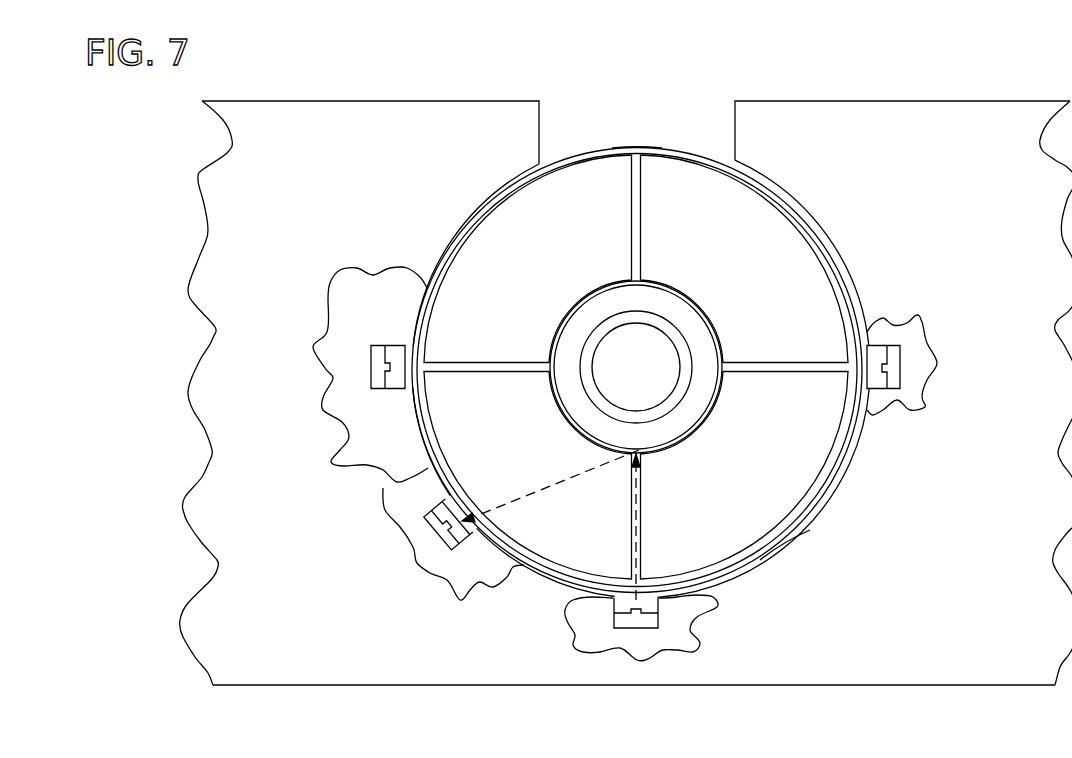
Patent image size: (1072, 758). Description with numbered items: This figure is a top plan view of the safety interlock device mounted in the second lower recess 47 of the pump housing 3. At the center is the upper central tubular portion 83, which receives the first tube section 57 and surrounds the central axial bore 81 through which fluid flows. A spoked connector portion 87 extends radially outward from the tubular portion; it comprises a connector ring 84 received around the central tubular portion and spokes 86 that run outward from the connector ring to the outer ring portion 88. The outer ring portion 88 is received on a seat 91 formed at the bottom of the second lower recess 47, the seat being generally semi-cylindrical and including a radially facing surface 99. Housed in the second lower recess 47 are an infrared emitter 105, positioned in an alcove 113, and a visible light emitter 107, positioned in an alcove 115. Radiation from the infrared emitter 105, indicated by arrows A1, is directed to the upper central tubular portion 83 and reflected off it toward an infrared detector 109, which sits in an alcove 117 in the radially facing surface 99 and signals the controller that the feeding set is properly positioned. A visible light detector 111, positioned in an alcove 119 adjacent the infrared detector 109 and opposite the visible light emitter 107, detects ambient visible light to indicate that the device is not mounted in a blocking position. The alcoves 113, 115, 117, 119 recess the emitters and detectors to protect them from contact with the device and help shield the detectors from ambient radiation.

The housing 3 is at (820, 119).
The second lower recess 47 is at (688, 140).
The first tube section 57 is at (680, 342).
The central axial bore 81 is at (643, 374).
The upper central tubular portion 83 is at (590, 300).
The connector ring 84 is at (565, 320).
The spokes 86 is at (633, 227).
The spoked connector portion 87 is at (742, 390).
The outer ring portion 88 is at (629, 150).
The seat 91 is at (852, 224).
The radially facing surface 99 is at (783, 535).
The infrared emitter 105 is at (629, 618).
The visible light emitter 107 is at (893, 350).
The infrared detector 109 is at (452, 553).
The visible light detector 111 is at (378, 347).
The alcove 113 is at (652, 598).
The alcove 115 is at (884, 353).
The alcove 117 is at (427, 503).
The alcove 119 is at (390, 355).
The arrows A1 is at (632, 523).